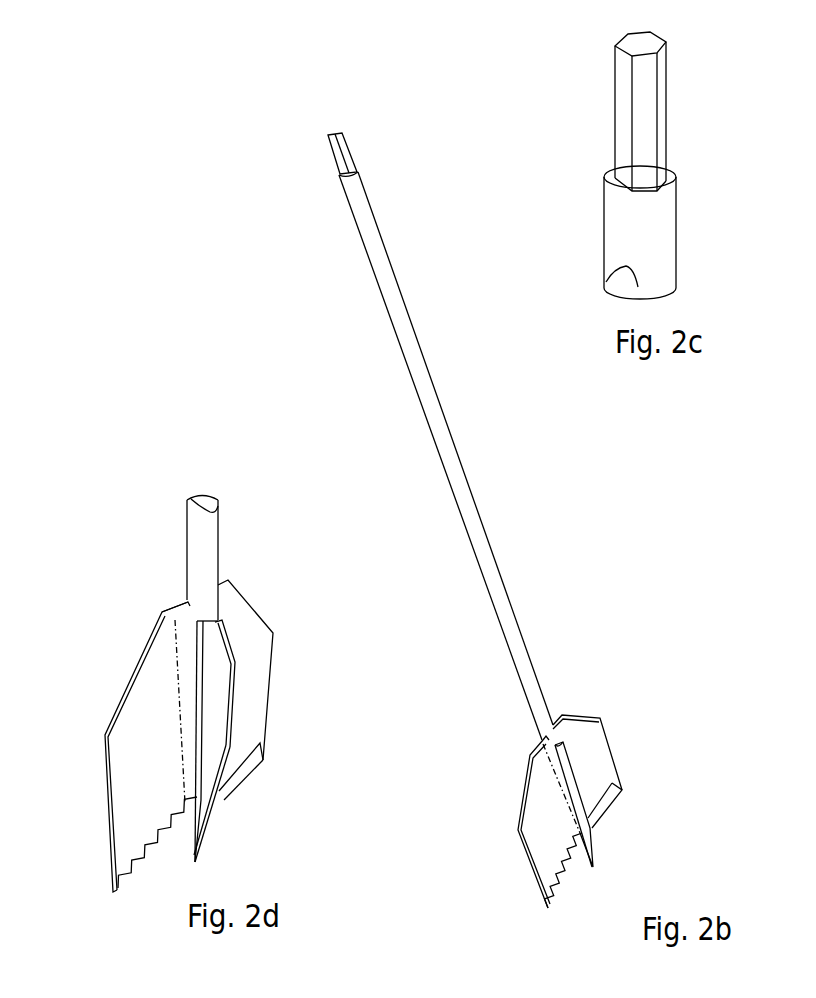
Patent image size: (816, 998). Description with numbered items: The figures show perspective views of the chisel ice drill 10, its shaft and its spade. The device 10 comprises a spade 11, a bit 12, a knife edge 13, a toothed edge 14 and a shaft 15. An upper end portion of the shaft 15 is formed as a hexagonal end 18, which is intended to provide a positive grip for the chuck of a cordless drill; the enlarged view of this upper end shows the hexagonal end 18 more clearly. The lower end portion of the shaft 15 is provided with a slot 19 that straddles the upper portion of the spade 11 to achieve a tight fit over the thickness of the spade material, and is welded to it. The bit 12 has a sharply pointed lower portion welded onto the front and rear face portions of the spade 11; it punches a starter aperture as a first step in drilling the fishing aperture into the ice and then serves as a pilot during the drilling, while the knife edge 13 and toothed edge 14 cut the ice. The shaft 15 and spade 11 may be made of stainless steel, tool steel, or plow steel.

In FIG. 2b, the chisel ice drill 10 is at (546, 558).
In FIG. 2b, the spade 11 is at (580, 715).
In FIG. 2d, the spade 11 is at (253, 647).
In FIG. 2b, the bit 12 is at (580, 773).
In FIG. 2d, the bit 12 is at (212, 813).
In FIG. 2b, the knife edge 13 is at (613, 797).
In FIG. 2d, the knife edge 13 is at (247, 760).
In FIG. 2b, the toothed edge 14 is at (553, 878).
In FIG. 2d, the toothed edge 14 is at (137, 848).
In FIG. 2c, the shaft 15 is at (626, 237).
In FIG. 2b, the shaft 15 is at (417, 370).
In FIG. 2d, the shaft 15 is at (207, 560).
In FIG. 2c, the hexagonal end 18 is at (640, 105).
In FIG. 2b, the hexagonal end 18 is at (347, 158).
In FIG. 2b, the slot 19 is at (542, 740).
In FIG. 2d, the slot 19 is at (195, 603).